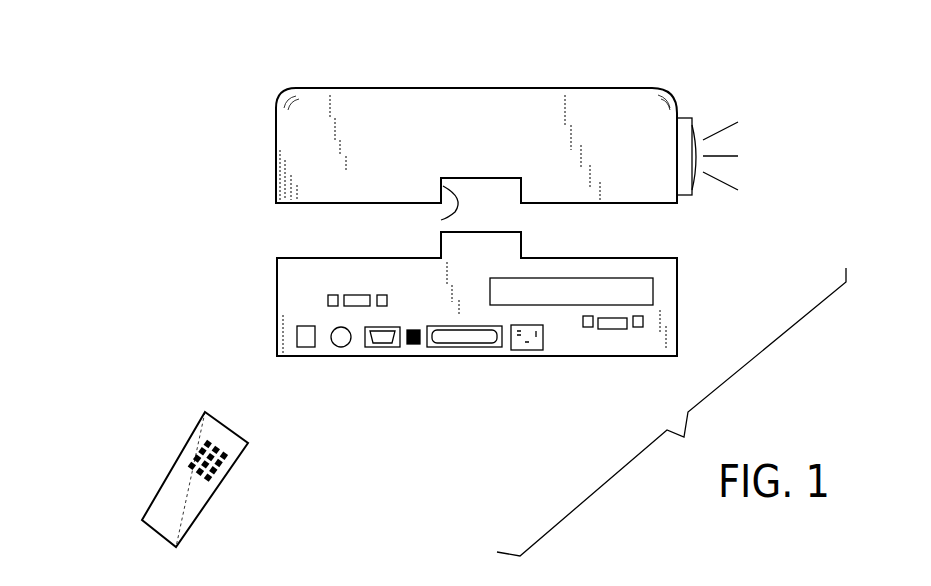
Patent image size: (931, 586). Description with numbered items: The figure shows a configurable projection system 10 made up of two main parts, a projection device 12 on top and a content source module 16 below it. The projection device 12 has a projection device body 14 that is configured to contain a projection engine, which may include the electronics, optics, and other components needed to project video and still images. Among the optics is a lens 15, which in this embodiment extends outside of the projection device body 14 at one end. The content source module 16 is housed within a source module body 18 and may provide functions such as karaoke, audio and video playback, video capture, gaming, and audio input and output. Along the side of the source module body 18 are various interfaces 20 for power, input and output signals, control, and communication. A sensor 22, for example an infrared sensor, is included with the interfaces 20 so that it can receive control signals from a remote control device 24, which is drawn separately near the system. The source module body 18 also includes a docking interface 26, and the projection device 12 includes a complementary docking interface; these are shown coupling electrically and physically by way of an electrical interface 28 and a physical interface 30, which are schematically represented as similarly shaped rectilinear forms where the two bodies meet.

The configurable projection system 10 is at (212, 72).
The projection device 12 is at (588, 88).
The projection device body 14 is at (382, 88).
The lens 15 is at (699, 128).
The content source module 16 is at (290, 308).
The source module body 18 is at (680, 326).
The interfaces 20 is at (547, 363).
The sensor 22 is at (305, 338).
The remote control device 24 is at (172, 467).
The docking interface 26 is at (441, 248).
The electrical interface 28 is at (495, 178).
The physical interface 30 is at (441, 232).